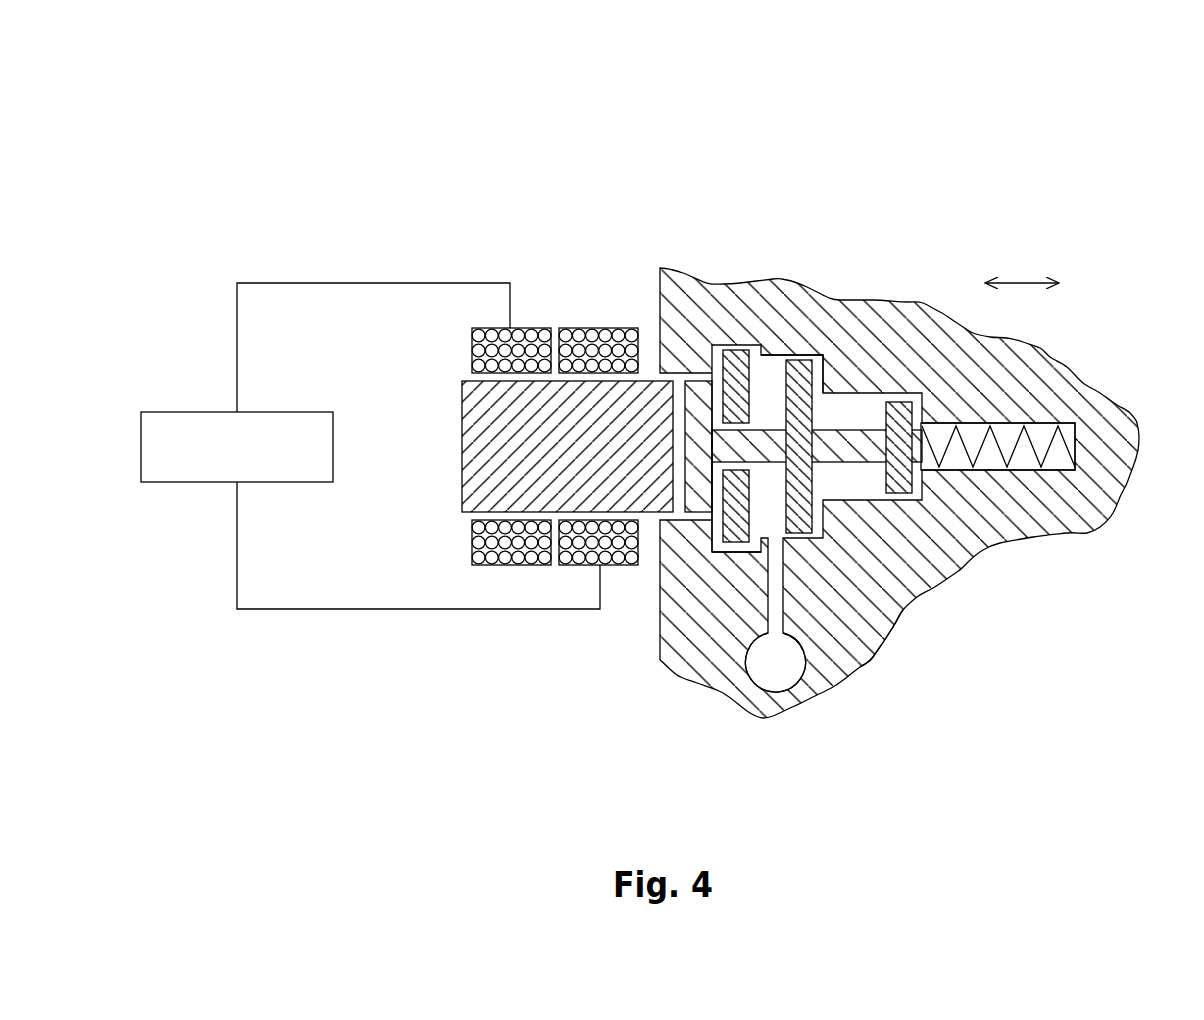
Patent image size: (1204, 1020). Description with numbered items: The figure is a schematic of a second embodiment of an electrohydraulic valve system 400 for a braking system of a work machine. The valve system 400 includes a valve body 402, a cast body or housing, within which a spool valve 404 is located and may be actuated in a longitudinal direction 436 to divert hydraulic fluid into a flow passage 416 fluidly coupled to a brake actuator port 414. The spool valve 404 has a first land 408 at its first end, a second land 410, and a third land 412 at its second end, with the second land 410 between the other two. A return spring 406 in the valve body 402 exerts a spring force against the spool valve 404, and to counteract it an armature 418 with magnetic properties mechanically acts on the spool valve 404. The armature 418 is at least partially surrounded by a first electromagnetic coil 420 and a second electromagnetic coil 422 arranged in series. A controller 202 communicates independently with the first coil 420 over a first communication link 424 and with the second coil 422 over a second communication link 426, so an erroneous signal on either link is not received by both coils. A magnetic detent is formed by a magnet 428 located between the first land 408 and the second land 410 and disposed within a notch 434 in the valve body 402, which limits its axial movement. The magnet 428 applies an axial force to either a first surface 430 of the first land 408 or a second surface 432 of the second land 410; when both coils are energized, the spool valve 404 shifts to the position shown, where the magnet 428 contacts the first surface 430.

The controller 202 is at (192, 412).
The electrohydraulic valve system 400 is at (890, 142).
The valve body 402 is at (659, 298).
The spool valve 404 is at (863, 430).
The return spring 406 is at (1073, 447).
The first land 408 is at (705, 379).
The second land 410 is at (804, 361).
The third land 412 is at (913, 412).
The brake actuator port 414 is at (775, 693).
The flow passage 416 is at (873, 657).
The armature 418 is at (458, 408).
The first electromagnetic coil 420 is at (467, 543).
The second electromagnetic coil 422 is at (580, 567).
The first communication link 424 is at (373, 283).
The second communication link 426 is at (418, 610).
The magnet 428 is at (740, 349).
The first surface 430 is at (707, 502).
The second surface 432 is at (781, 393).
The notch 434 is at (730, 553).
The longitudinal direction 436 is at (1023, 280).